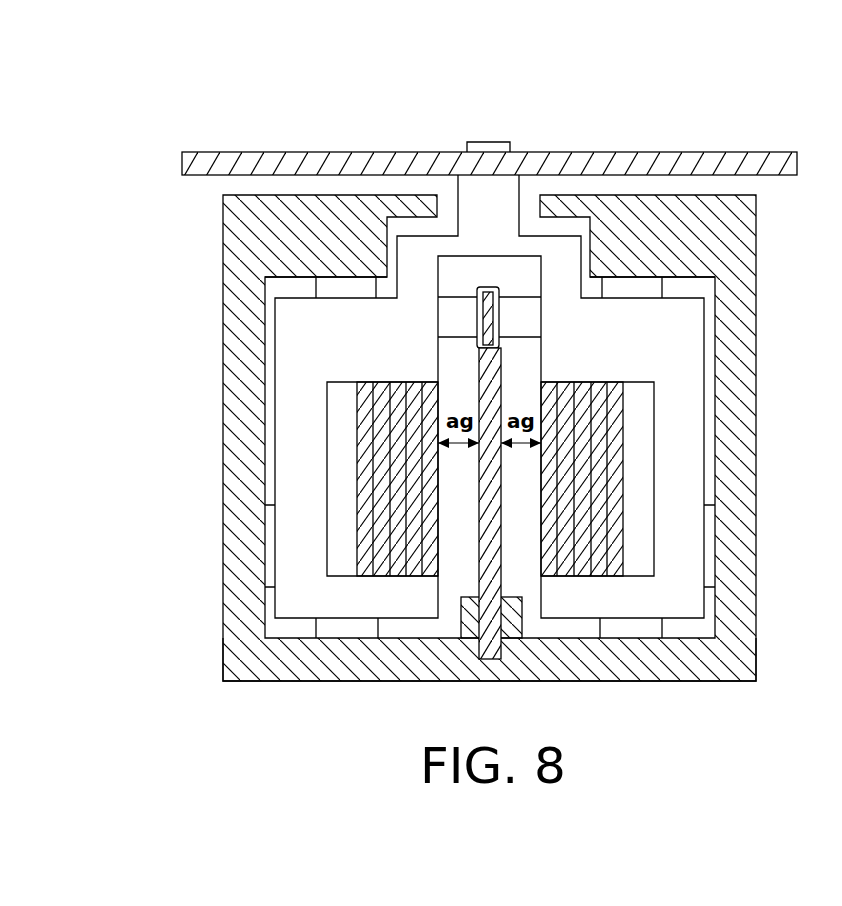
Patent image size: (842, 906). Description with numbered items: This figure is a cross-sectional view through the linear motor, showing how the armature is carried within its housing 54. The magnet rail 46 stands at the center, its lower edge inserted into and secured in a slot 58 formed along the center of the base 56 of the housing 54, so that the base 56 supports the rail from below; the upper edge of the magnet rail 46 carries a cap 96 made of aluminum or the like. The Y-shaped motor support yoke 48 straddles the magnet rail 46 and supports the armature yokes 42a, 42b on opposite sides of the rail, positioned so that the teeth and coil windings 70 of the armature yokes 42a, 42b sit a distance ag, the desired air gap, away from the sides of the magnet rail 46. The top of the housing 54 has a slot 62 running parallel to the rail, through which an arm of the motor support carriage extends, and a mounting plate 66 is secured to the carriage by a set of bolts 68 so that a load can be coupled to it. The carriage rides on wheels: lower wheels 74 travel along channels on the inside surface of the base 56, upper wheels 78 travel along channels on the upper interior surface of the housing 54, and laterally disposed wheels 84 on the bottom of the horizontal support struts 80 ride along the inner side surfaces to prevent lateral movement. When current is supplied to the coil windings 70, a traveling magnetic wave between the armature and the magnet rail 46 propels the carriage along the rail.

The armature yoke 42a is at (640, 484).
The armature yoke 42b is at (343, 500).
The magnet rail 46 is at (480, 490).
The motor support yoke 48 is at (417, 256).
The housing 54 is at (290, 247).
The base 56 is at (637, 668).
The slot 58 is at (512, 620).
The slot 62 is at (446, 178).
The mounting plate 66 is at (648, 152).
The bolts 68 is at (483, 142).
The coil windings 70 is at (378, 425).
The lower wheel 74 is at (343, 630).
The upper wheel 78 is at (345, 290).
The horizontal support strut 80 is at (345, 268).
The laterally disposed wheel 84 is at (265, 548).
The cap 96 is at (488, 287).